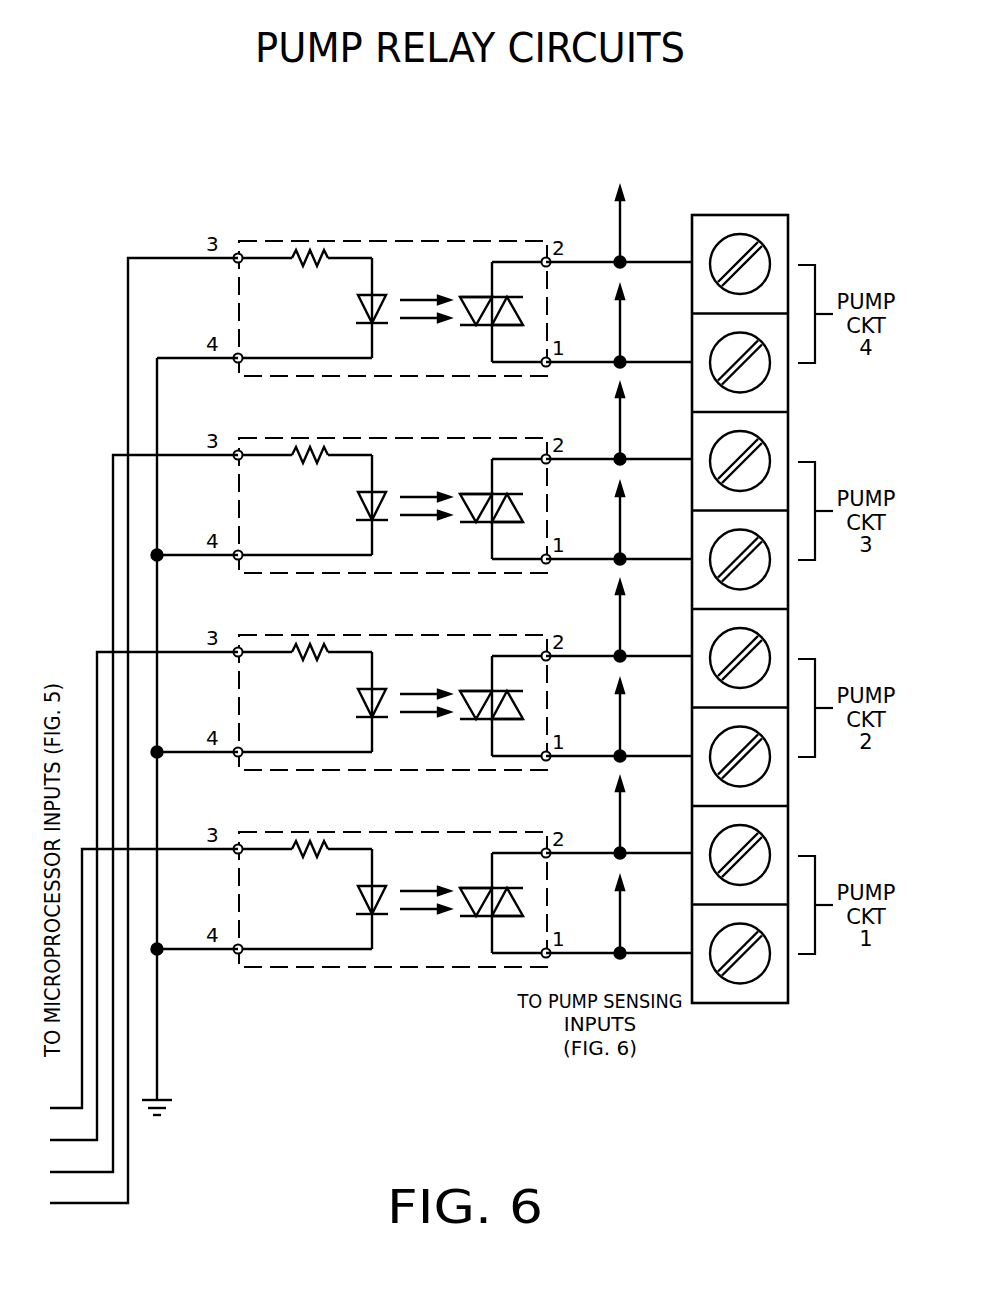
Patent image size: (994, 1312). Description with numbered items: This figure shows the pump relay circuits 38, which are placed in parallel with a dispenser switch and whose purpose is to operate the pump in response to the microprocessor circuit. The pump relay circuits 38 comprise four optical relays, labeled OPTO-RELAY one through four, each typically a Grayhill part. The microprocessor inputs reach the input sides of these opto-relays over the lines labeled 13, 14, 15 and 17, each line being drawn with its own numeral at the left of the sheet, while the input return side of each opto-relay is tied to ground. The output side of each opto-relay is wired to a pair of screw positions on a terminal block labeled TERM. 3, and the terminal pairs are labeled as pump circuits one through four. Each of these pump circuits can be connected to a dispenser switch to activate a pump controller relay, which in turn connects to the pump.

The pump relay circuits 38 is at (480, 180).
The terminal block 3 is at (740, 590).
The microprocessor input line 13 is at (137, 733).
The microprocessor input line 14 is at (137, 816).
The microprocessor input line 15 is at (137, 898).
The microprocessor input line 17 is at (137, 981).